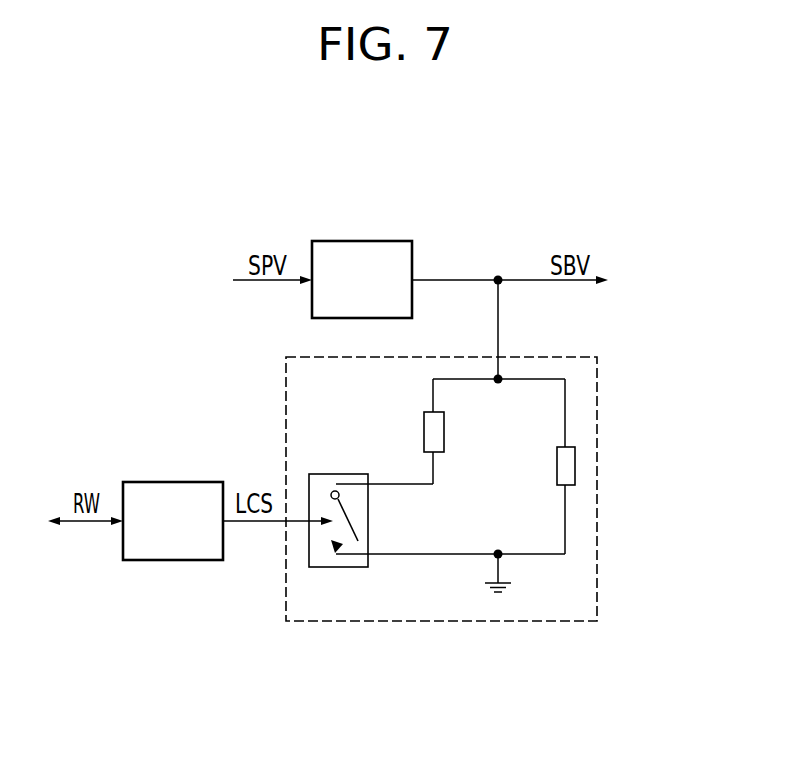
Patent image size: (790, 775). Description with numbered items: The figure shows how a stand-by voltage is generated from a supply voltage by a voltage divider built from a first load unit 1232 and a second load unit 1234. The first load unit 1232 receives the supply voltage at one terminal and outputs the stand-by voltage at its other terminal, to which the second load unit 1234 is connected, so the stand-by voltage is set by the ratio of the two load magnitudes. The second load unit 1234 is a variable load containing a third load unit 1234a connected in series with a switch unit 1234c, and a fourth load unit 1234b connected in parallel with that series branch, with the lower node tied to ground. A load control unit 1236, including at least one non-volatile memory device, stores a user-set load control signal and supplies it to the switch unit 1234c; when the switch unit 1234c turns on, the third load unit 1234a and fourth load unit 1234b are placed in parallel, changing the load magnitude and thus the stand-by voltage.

The first load unit 1232 is at (360, 241).
The second load unit 1234 is at (494, 525).
The third load unit 1234a is at (424, 424).
The fourth load unit 1234b is at (575, 466).
The switch unit 1234c is at (340, 567).
The load control unit 1236 is at (173, 560).